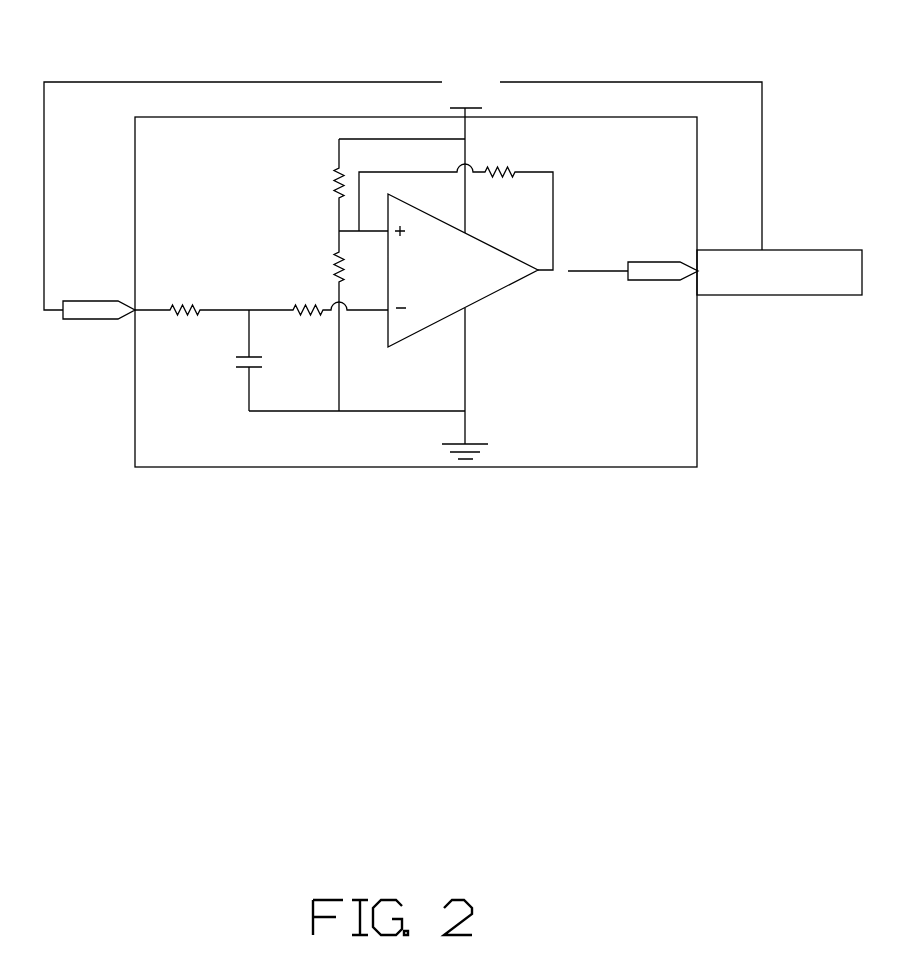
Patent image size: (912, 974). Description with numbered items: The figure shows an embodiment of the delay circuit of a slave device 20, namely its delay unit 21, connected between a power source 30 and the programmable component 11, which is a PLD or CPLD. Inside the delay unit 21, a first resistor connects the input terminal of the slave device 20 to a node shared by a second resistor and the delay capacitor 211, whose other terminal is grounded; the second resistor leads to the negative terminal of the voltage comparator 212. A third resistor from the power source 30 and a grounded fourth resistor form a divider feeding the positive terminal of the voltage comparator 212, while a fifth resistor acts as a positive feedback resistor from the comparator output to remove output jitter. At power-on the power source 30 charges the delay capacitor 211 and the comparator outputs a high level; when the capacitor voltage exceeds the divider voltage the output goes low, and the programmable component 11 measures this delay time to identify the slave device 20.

The power source 30 is at (482, 63).
The delay unit 21 is at (625, 117).
The programmable component 11 is at (802, 250).
The slave device 20 is at (94, 320).
The delay capacitor 211 is at (242, 372).
The voltage comparator 212 is at (472, 285).